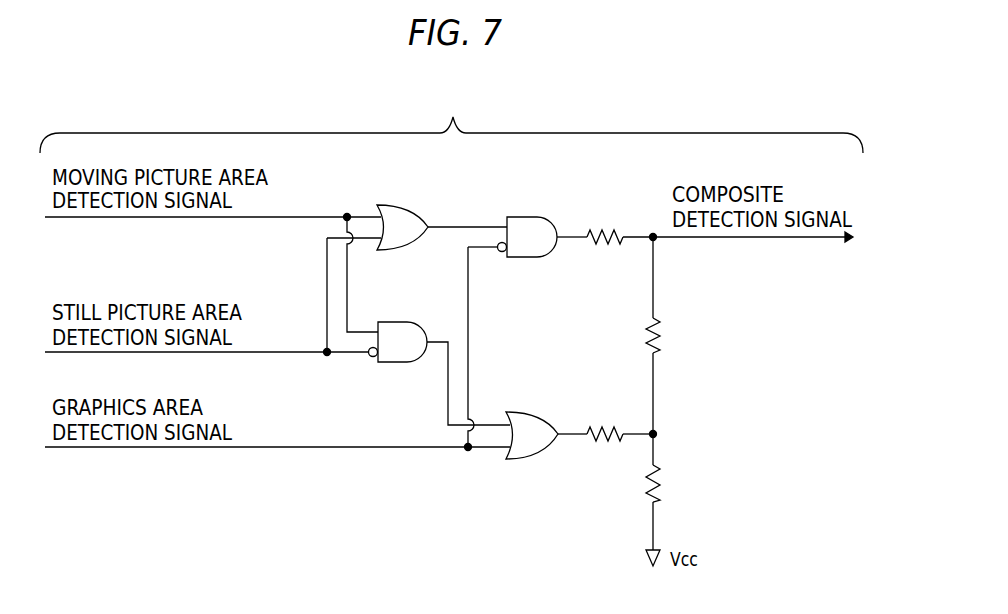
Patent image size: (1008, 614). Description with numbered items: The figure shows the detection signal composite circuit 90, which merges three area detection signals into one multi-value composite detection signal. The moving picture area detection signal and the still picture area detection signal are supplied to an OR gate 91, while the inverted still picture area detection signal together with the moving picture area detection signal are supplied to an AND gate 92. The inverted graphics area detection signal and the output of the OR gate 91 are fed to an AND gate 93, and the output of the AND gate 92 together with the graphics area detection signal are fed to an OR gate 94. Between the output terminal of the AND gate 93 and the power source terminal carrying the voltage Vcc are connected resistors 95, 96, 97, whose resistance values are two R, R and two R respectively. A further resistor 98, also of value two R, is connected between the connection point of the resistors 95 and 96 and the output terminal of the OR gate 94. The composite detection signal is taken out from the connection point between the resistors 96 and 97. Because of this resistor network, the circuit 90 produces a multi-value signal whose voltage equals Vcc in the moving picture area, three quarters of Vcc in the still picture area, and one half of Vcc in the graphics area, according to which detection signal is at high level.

The detection signal composite circuit 90 is at (462, 109).
The OR gate 91 is at (398, 205).
The AND gate 92 is at (398, 322).
The AND gate 93 is at (523, 217).
The OR gate 94 is at (528, 412).
The resistor 95 is at (666, 481).
The resistor 96 is at (666, 333).
The resistor 97 is at (600, 247).
The resistor 98 is at (600, 444).